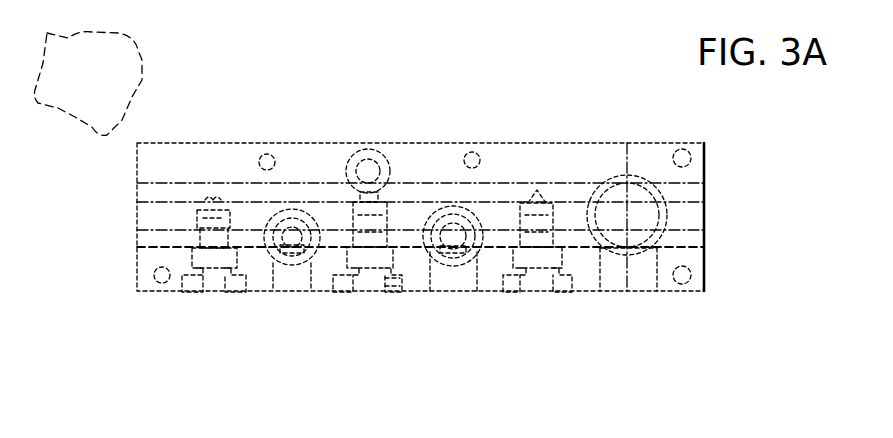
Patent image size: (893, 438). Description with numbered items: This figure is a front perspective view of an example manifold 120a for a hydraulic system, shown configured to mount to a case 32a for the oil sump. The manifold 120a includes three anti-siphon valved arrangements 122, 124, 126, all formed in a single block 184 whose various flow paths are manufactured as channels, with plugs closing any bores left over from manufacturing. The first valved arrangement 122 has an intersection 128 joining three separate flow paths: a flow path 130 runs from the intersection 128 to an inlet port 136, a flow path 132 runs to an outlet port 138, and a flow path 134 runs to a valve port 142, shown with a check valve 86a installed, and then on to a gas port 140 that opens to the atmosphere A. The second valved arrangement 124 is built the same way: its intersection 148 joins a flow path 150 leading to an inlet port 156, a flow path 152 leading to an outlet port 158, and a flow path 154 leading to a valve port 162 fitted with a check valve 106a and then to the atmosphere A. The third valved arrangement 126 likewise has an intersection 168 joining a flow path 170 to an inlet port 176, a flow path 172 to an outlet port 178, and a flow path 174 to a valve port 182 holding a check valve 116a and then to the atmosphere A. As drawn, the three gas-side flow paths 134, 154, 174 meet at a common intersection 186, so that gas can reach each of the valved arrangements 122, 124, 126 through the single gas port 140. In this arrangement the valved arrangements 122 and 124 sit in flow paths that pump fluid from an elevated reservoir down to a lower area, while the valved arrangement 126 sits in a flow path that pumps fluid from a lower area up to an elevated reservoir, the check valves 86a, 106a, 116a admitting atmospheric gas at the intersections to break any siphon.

The case 32a is at (113, 88).
The manifold 120a is at (784, 269).
The block 184 is at (705, 187).
The flow path 134 is at (177, 183).
The flow path 154 is at (407, 230).
The flow path 174 is at (575, 227).
The flow path 132 is at (326, 187).
The outlet port 138 is at (279, 205).
The inlet port 136 is at (220, 308).
The flow path 130 is at (297, 280).
The intersection 128 is at (265, 260).
The anti-siphon valved arrangement 122 is at (168, 254).
The check valve 86a is at (192, 265).
The valve port 142 is at (190, 306).
The gas port 140 is at (436, 111).
The atmosphere A is at (398, 142).
The intersection 186 is at (407, 169).
The anti-siphon valved arrangement 124 is at (399, 208).
The check valve 106a is at (370, 292).
The valve port 162 is at (390, 303).
The outlet port 158 is at (600, 258).
The flow path 152 is at (482, 207).
The inlet port 156 is at (530, 314).
The flow path 150 is at (453, 281).
The intersection 148 is at (420, 258).
The anti-siphon valved arrangement 126 is at (568, 186).
The check valve 116a is at (548, 298).
The valve port 182 is at (556, 302).
The outlet port 178 is at (716, 215).
The flow path 172 is at (661, 213).
The intersection 168 is at (591, 257).
The inlet port 176 is at (690, 291).
The flow path 170 is at (633, 271).